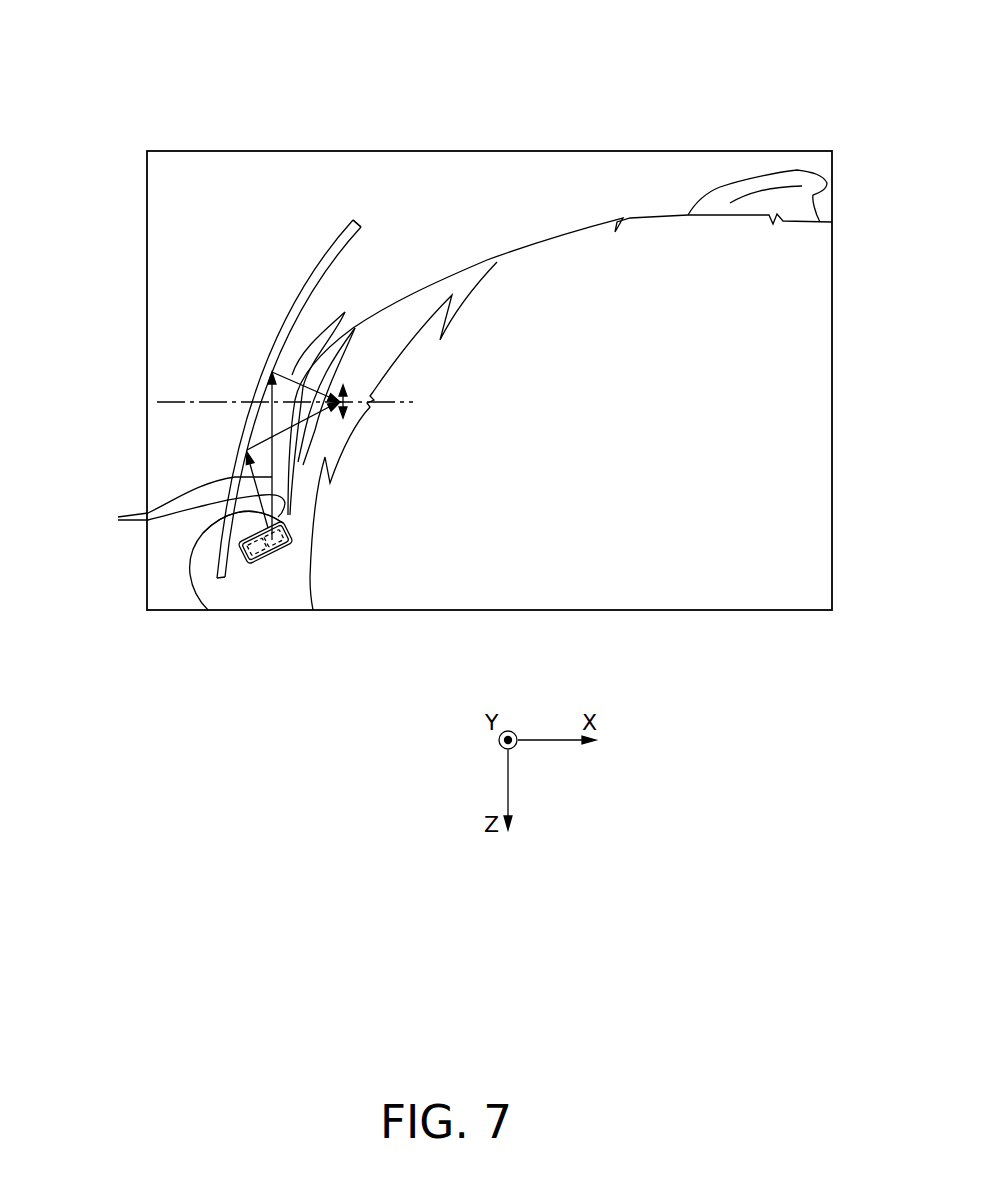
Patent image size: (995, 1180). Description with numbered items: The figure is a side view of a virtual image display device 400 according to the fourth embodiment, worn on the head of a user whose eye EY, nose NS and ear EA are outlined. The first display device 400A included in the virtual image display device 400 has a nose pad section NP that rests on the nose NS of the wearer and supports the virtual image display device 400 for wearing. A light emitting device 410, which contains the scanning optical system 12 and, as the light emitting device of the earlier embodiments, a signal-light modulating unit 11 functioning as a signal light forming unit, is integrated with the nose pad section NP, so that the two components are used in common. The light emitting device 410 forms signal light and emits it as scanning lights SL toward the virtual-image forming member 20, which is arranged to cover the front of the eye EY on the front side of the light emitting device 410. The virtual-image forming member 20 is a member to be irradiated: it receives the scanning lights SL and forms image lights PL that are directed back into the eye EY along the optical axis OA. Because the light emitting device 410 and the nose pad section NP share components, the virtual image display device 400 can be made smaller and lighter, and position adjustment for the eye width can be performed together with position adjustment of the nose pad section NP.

The virtual image display device 400 is at (330, 100).
The first display device 400A is at (330, 222).
The virtual-image forming member 20 is at (268, 328).
The light emitting device 410 is at (270, 575).
The signal-light modulating unit 11 is at (243, 553).
The scanning optical system 12 is at (287, 560).
The eye EY is at (345, 390).
The ear EA is at (788, 190).
The image lights PL is at (327, 398).
The optical axis OA is at (202, 402).
The scanning lights SL is at (185, 506).
The nose NS is at (212, 588).
The nose pad section NP is at (243, 543).